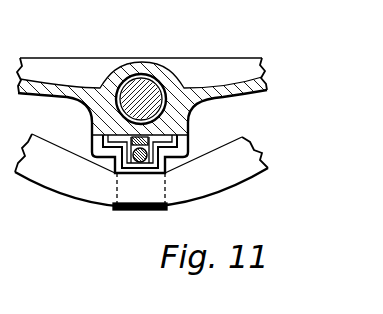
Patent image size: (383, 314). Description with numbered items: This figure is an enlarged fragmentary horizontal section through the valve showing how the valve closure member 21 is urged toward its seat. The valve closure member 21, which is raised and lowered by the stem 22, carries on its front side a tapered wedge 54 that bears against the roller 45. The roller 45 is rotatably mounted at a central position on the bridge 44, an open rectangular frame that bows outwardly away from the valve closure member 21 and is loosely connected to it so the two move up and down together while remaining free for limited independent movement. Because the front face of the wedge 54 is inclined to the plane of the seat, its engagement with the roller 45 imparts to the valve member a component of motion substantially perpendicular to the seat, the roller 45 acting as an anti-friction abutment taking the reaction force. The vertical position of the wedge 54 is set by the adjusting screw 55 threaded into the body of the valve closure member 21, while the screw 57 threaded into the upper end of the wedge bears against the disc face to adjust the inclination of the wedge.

The valve closure member 21 is at (267, 90).
The stem 22 is at (138, 88).
The bridge 44 is at (241, 173).
The roller 45 is at (123, 211).
The tapered wedge 54 is at (100, 137).
The adjusting screw 55 is at (150, 146).
The screw 57 is at (168, 125).